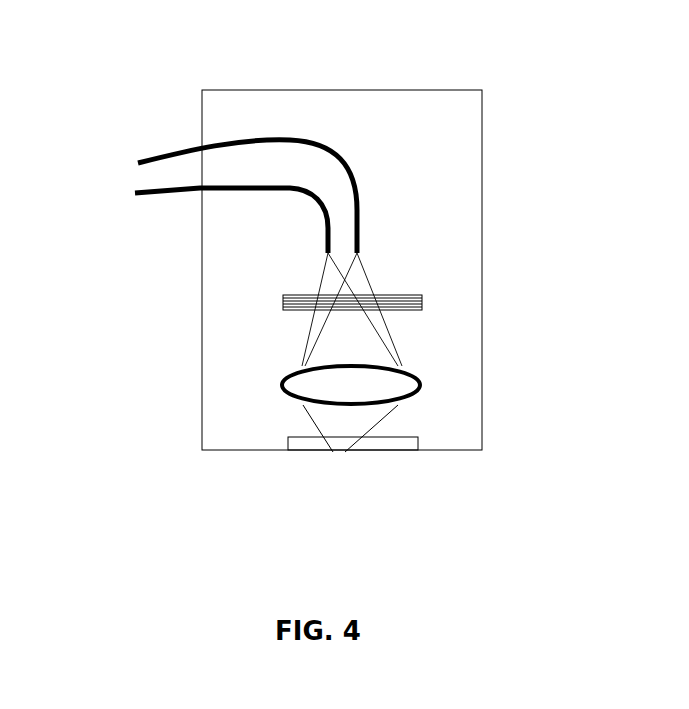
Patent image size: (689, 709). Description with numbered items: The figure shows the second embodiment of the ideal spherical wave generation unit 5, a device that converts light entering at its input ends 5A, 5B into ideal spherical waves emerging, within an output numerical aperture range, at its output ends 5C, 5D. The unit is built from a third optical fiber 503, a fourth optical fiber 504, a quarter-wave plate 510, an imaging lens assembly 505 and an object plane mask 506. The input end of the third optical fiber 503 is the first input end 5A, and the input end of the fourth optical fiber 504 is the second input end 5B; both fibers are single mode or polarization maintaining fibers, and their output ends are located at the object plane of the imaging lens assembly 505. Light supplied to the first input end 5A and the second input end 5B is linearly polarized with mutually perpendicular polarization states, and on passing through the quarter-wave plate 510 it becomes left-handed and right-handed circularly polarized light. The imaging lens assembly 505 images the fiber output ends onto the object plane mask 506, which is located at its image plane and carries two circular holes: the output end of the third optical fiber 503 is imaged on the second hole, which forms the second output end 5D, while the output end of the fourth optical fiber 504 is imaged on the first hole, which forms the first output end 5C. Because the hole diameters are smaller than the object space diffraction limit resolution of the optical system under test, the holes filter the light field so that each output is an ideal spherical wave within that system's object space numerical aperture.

The ideal spherical wave generation unit 5 is at (240, 90).
The first input end 5A is at (138, 163).
The second input end 5B is at (135, 193).
The third optical fiber 503 is at (240, 147).
The fourth optical fiber 504 is at (332, 228).
The quarter-wave plate 510 is at (422, 295).
The imaging lens assembly 505 is at (418, 368).
The object plane mask 506 is at (418, 443).
The first output end 5C is at (300, 406).
The second output end 5D is at (317, 437).